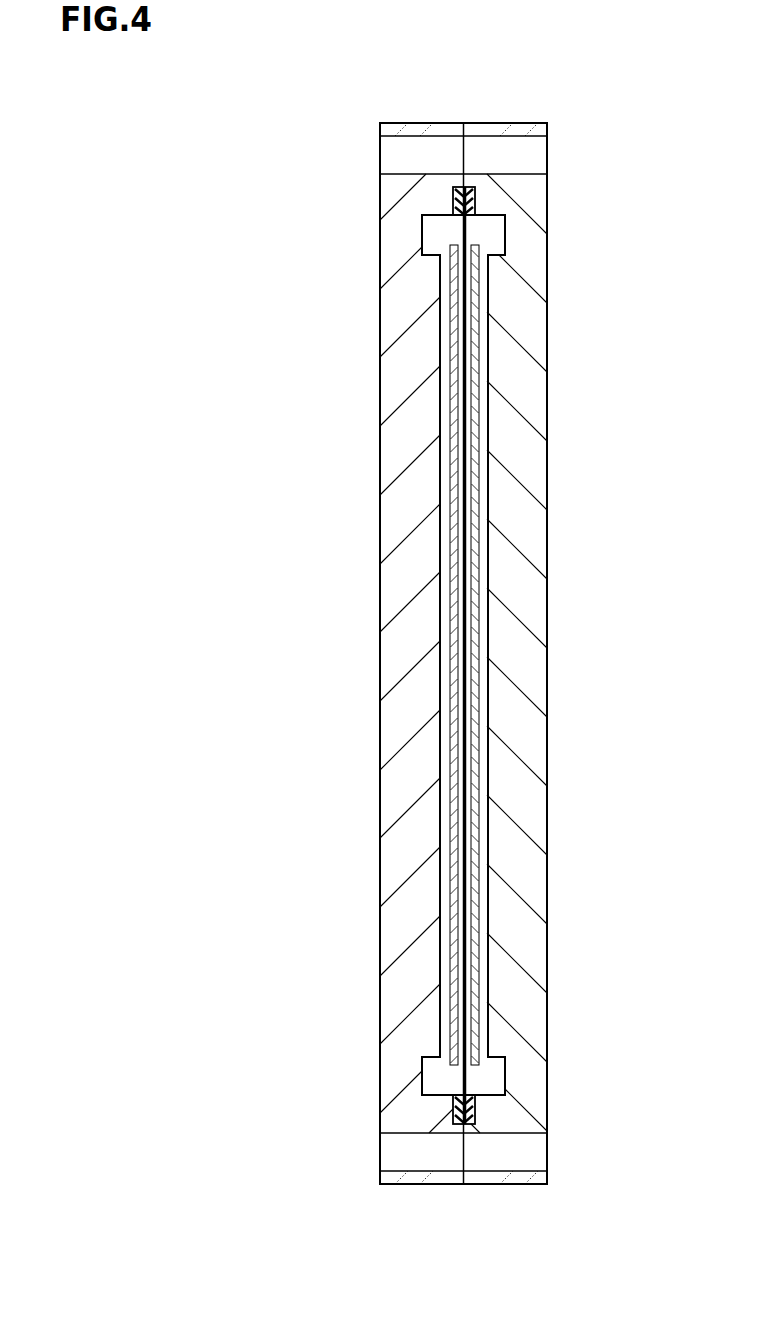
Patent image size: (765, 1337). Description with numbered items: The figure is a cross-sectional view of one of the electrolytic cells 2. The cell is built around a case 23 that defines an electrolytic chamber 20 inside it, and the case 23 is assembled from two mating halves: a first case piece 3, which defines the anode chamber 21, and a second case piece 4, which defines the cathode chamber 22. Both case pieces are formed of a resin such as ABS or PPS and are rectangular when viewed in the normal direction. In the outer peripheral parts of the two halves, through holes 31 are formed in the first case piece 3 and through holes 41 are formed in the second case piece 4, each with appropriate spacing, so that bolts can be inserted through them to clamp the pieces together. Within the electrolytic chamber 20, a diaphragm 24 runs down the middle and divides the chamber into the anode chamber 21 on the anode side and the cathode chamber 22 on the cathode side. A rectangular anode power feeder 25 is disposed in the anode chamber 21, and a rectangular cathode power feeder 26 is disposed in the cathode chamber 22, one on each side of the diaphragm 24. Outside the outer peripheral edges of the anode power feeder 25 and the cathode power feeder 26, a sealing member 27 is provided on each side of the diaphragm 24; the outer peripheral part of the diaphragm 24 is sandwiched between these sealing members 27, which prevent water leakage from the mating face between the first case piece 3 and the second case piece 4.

The electrolytic cell 2 is at (612, 160).
The first case piece 3 is at (405, 631).
The second case piece 4 is at (512, 590).
The electrolytic chamber 20 is at (480, 284).
The anode chamber 21 is at (443, 481).
The cathode chamber 22 is at (478, 481).
The case 23 is at (477, 1207).
The diaphragm 24 is at (462, 367).
The anode power feeder 25 is at (448, 752).
The cathode power feeder 26 is at (470, 710).
The sealing member 27 is at (455, 193).
The through hole 31 is at (423, 153).
The through hole 41 is at (505, 153).